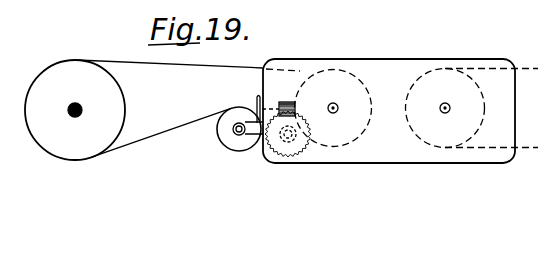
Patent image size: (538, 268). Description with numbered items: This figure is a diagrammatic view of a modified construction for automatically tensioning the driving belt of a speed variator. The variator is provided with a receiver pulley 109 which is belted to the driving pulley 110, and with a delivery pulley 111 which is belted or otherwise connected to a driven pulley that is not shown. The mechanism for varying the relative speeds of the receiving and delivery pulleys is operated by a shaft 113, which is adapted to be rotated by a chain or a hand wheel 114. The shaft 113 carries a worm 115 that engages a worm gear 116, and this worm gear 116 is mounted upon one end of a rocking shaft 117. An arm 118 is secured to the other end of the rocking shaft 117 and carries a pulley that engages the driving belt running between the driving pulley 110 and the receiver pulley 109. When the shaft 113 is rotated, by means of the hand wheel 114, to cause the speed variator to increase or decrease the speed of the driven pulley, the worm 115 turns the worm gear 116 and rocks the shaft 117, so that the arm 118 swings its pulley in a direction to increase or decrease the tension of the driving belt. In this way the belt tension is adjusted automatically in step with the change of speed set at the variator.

The receiver pulley 109 is at (359, 89).
The driving pulley 110 is at (69, 62).
The delivery pulley 111 is at (449, 70).
The shaft 113 is at (271, 101).
The hand wheel 114 is at (257, 100).
The worm 115 is at (289, 103).
The worm gear 116 is at (291, 148).
The rocking shaft 117 is at (291, 136).
The arm 118 is at (236, 144).